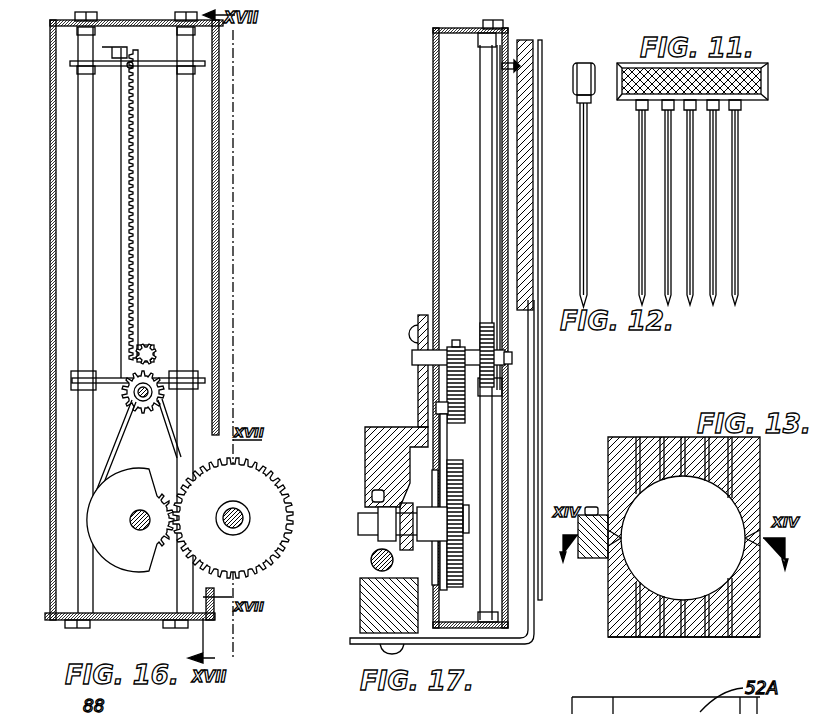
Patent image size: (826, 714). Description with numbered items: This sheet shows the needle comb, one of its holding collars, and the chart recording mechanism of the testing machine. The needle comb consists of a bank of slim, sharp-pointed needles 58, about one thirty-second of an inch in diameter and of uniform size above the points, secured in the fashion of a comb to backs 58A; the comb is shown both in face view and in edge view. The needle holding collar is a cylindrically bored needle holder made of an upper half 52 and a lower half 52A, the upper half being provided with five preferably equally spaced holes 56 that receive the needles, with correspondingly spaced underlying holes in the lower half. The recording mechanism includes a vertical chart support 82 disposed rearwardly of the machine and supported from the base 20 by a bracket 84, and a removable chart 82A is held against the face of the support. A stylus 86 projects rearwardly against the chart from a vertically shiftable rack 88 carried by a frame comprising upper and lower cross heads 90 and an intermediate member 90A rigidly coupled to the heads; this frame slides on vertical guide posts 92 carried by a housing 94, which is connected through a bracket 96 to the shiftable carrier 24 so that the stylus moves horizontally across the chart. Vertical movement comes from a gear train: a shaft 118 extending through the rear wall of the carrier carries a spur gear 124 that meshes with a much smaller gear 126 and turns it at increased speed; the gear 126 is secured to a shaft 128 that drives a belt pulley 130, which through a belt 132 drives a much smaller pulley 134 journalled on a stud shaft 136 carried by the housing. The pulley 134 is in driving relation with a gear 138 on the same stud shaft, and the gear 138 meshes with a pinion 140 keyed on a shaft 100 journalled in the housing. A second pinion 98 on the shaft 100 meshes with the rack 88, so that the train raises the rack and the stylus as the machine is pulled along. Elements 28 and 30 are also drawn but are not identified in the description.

In FIG. 17, the base 20 is at (385, 598).
In FIG. 17, the shiftable carrier 24 is at (378, 462).
In FIG. 17, the pivot pin 28 is at (371, 562).
In FIG. 17, the bracket 30 is at (372, 496).
In FIG. 13, the upper half of needle holder 52 is at (680, 440).
In FIG. 13, the lower half of needle holder 52A is at (716, 630).
In FIG. 13, the holes 56 is at (652, 445).
In FIG. 11, the needles 58 is at (737, 235).
In FIG. 12, the needles 58 is at (586, 248).
In FIG. 12, the backs 58A is at (584, 70).
In FIG. 17, the chart support 82 is at (526, 216).
In FIG. 17, the chart 82A is at (530, 186).
In FIG. 17, the bracket 84 is at (515, 645).
In FIG. 16, the stylus 86 is at (126, 67).
In FIG. 17, the stylus 86 is at (500, 70).
In FIG. 16, the rack 88 is at (128, 130).
In FIG. 17, the rack 88 is at (512, 345).
In FIG. 16, the cross heads 90 is at (147, 50).
In FIG. 17, the cross heads 90 is at (485, 40).
In FIG. 16, the intermediate member 90A is at (130, 225).
In FIG. 17, the intermediate member 90A is at (480, 170).
In FIG. 16, the guide posts 92 is at (185, 130).
In FIG. 17, the guide posts 92 is at (492, 210).
In FIG. 16, the housing 94 is at (55, 230).
In FIG. 17, the housing 94 is at (433, 260).
In FIG. 17, the bracket 96 is at (420, 390).
In FIG. 17, the pinion 98 is at (513, 357).
In FIG. 16, the shaft 100 is at (152, 353).
In FIG. 17, the shaft 100 is at (412, 357).
In FIG. 16, the shaft 118 is at (243, 519).
In FIG. 17, the shaft 118 is at (368, 528).
In FIG. 16, the spur gear 124 is at (262, 490).
In FIG. 17, the spur gear 124 is at (464, 487).
In FIG. 16, the gear 126 is at (216, 520).
In FIG. 16, the shaft 128 is at (130, 522).
In FIG. 16, the belt pulley 130 is at (118, 560).
In FIG. 17, the belt pulley 130 is at (430, 560).
In FIG. 16, the belt 132 is at (112, 455).
In FIG. 17, the belt 132 is at (441, 441).
In FIG. 16, the pulley 134 is at (150, 396).
In FIG. 17, the pulley 134 is at (438, 408).
In FIG. 16, the stud shaft 136 is at (152, 392).
In FIG. 17, the stud shaft 136 is at (466, 380).
In FIG. 16, the gear 138 is at (160, 378).
In FIG. 17, the gear 138 is at (466, 405).
In FIG. 16, the pinion 140 is at (150, 346).
In FIG. 17, the pinion 140 is at (456, 347).